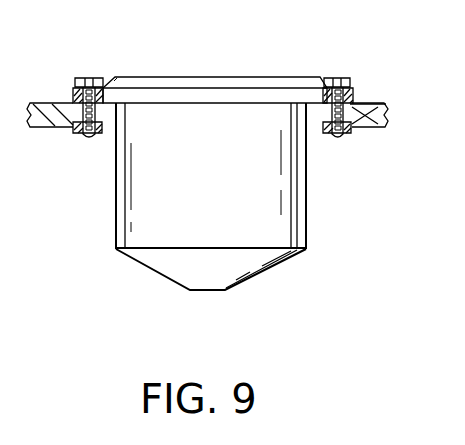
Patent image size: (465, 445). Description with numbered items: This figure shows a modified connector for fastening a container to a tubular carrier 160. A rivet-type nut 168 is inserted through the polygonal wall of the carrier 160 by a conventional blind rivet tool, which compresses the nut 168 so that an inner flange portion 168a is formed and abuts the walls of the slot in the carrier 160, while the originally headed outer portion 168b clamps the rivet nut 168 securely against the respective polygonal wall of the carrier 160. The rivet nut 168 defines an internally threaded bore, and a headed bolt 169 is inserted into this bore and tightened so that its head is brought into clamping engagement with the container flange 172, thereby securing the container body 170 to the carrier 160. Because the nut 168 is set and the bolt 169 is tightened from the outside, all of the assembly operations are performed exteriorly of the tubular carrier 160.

The carrier 160 is at (367, 107).
The rivet-type nut 168 is at (68, 126).
The inner flange portion 168a is at (100, 134).
The outer portion 168b is at (72, 95).
The headed bolt 169 is at (86, 77).
The container body 170 is at (307, 202).
The container flange 172 is at (173, 97).